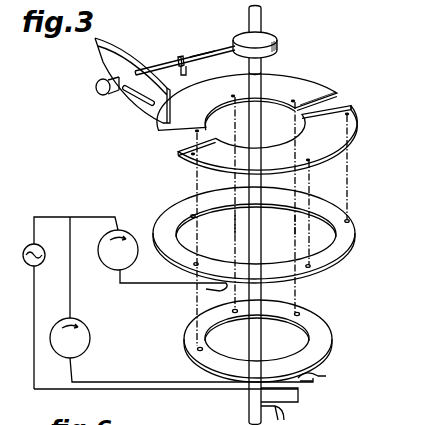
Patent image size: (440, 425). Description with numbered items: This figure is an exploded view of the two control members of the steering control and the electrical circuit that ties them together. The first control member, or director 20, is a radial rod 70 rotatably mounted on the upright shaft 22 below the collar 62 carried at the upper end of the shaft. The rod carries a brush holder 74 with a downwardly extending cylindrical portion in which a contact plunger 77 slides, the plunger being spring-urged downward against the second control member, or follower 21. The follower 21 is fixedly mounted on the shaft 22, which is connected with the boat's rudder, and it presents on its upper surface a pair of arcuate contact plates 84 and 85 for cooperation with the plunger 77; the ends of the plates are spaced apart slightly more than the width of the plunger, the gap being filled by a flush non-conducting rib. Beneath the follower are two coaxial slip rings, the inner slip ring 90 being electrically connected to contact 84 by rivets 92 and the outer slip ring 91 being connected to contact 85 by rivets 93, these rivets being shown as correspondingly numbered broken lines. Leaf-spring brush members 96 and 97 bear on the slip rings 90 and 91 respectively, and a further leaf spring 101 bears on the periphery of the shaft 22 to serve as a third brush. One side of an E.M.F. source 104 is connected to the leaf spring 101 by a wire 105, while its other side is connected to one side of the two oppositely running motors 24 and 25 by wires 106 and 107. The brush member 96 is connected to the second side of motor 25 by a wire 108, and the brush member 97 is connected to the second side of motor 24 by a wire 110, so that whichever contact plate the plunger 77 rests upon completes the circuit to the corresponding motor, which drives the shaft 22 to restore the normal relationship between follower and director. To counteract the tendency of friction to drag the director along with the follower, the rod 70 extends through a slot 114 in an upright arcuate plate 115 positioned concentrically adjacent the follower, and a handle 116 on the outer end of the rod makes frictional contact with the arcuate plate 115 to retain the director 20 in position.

The director 20 is at (156, 64).
The follower 21 is at (327, 79).
The upright shaft 22 is at (262, 10).
The motor 24 is at (105, 264).
The motor 25 is at (90, 353).
The collar 62 is at (278, 46).
The radial rod 70 is at (201, 55).
The brush holder 74 is at (179, 56).
The plunger 77 is at (192, 72).
The contact 84 is at (326, 92).
The contact 85 is at (355, 133).
The inner slip ring 90 is at (325, 331).
The outer slip ring 91 is at (356, 240).
The rivets 92 is at (234, 225).
The rivets 93 is at (196, 184).
The brush member 96 is at (318, 376).
The brush member 97 is at (209, 288).
The leaf spring 101 is at (287, 410).
The E.M.F. source 104 is at (42, 247).
The wire 105 is at (155, 389).
The wire 106 is at (94, 217).
The wire 107 is at (72, 297).
The wire 108 is at (150, 382).
The wire 110 is at (166, 288).
The slot 114 is at (137, 97).
The arcuate plate 115 is at (149, 117).
The handle 116 is at (99, 93).